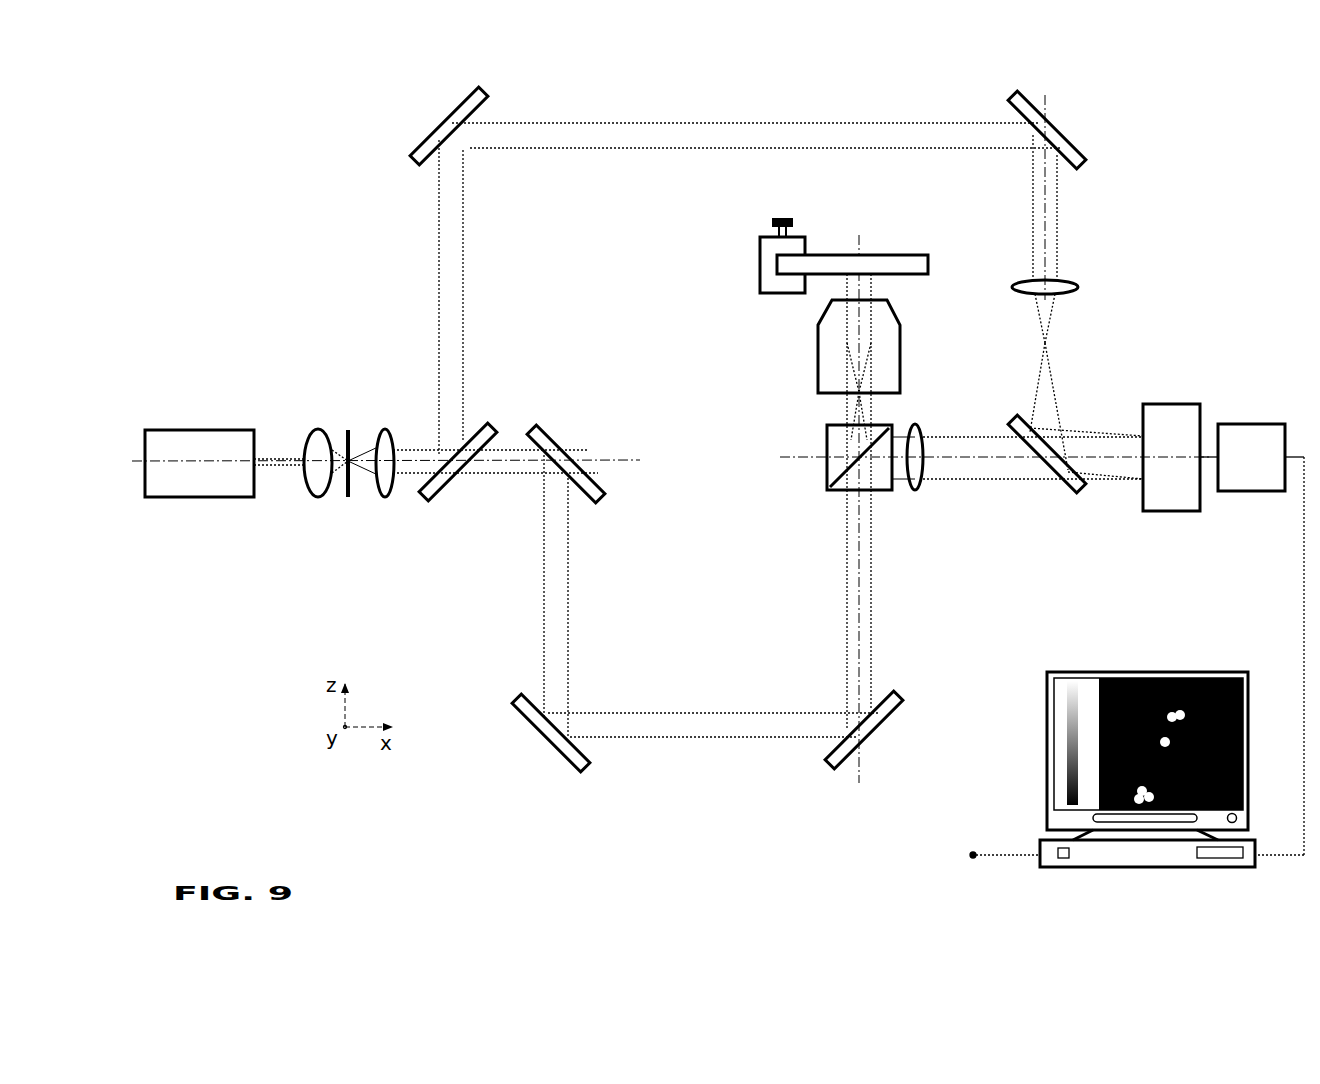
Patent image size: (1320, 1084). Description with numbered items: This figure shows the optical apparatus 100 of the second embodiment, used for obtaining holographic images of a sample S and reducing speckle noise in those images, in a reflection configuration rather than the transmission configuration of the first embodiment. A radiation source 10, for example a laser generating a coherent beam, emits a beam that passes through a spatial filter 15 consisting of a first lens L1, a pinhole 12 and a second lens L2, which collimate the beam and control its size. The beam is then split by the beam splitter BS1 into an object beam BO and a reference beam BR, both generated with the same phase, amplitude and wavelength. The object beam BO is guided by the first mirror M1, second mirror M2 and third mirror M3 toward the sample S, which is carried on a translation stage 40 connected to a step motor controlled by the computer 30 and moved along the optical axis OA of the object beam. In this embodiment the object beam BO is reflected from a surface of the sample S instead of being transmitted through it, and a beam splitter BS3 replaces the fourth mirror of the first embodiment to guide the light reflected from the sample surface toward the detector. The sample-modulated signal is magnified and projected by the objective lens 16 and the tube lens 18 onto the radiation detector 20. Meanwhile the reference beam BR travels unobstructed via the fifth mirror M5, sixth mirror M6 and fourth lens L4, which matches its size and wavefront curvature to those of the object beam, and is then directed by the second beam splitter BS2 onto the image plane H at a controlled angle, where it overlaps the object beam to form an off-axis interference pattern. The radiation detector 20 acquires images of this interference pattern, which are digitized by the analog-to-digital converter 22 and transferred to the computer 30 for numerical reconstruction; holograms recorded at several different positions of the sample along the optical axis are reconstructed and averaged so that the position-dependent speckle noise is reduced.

The optical apparatus 100 is at (260, 286).
The radiation source 10 is at (197, 497).
The spatial filter 15 is at (395, 416).
The first lens L1 is at (318, 497).
The pinhole 12 is at (348, 497).
The second lens L2 is at (385, 497).
The beam splitter BS1 is at (456, 492).
The first mirror M1 is at (582, 455).
The second mirror M2 is at (560, 772).
The third mirror M3 is at (840, 772).
The fifth mirror M5 is at (445, 122).
The sixth mirror M6 is at (1062, 125).
The reference beam BR is at (465, 276).
The object beam BO is at (570, 606).
The optical axis OA is at (858, 538).
The translation stage 40 is at (760, 262).
The sample S is at (895, 255).
The objective lens 16 is at (818, 355).
The beam splitter BS3 is at (827, 478).
The tube lens 18 is at (916, 495).
The fourth lens L4 is at (1080, 287).
The second beam splitter BS2 is at (1020, 422).
The image plane H is at (1140, 420).
The radiation detector 20 is at (1182, 404).
The analog-to-digital converter 22 is at (1262, 424).
The computer 30 is at (1215, 672).